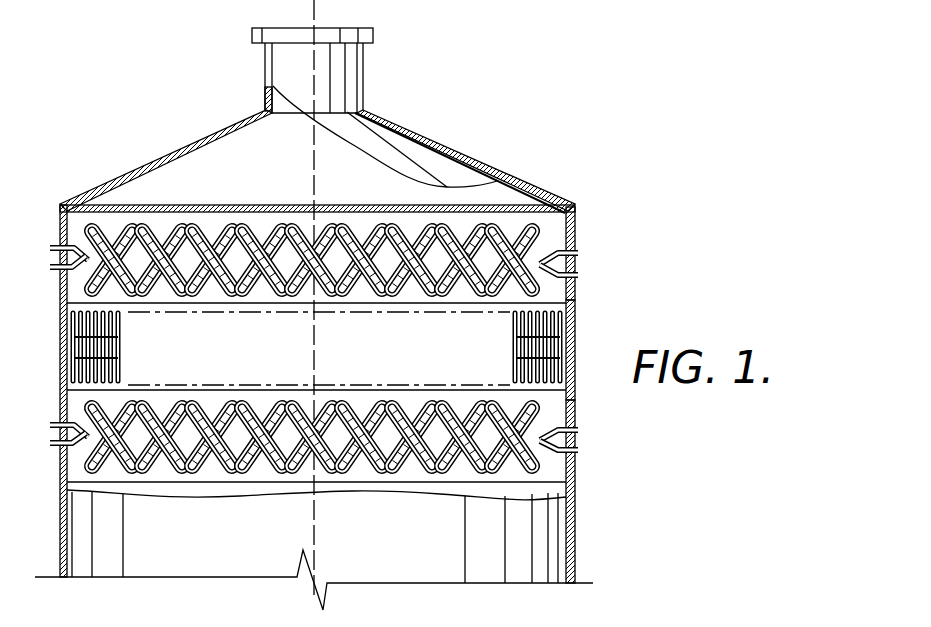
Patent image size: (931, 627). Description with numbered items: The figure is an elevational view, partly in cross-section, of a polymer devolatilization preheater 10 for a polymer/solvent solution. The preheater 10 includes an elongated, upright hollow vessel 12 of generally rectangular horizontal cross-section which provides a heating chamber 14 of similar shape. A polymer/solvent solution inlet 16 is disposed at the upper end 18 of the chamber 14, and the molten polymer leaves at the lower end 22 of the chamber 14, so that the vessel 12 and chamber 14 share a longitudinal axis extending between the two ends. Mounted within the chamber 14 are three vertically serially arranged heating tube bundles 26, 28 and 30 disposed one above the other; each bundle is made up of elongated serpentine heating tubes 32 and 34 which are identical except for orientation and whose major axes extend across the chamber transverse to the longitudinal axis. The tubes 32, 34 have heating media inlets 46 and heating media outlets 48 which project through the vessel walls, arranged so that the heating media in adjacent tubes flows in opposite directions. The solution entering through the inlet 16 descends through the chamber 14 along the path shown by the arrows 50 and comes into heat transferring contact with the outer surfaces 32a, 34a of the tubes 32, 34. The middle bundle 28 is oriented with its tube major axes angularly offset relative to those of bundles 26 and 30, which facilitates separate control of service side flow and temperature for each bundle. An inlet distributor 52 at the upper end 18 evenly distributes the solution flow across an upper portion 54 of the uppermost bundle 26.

The polymer devolatilization preheater 10 is at (342, 341).
The hollow vessel 12 is at (151, 567).
The heating chamber 14 is at (563, 300).
The inlet 16 is at (363, 82).
The upper end 18 is at (450, 157).
The lower end 22 is at (577, 578).
The heating tube bundle 26 is at (87, 228).
The heating tube bundle 28 is at (70, 318).
The heating tube bundle 30 is at (87, 408).
The serpentine heating tube 32 is at (580, 272).
The outer surface 32a is at (500, 214).
The serpentine heating tube 34 is at (576, 240).
The outer surface 34a is at (530, 220).
The heating media inlet 46 is at (50, 273).
The heating media outlet 48 is at (53, 246).
The arrows 50 is at (288, 133).
The inlet distributor 52 is at (178, 205).
The upper portion 54 is at (295, 222).